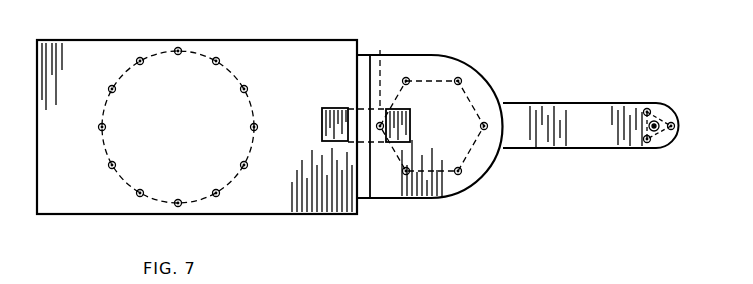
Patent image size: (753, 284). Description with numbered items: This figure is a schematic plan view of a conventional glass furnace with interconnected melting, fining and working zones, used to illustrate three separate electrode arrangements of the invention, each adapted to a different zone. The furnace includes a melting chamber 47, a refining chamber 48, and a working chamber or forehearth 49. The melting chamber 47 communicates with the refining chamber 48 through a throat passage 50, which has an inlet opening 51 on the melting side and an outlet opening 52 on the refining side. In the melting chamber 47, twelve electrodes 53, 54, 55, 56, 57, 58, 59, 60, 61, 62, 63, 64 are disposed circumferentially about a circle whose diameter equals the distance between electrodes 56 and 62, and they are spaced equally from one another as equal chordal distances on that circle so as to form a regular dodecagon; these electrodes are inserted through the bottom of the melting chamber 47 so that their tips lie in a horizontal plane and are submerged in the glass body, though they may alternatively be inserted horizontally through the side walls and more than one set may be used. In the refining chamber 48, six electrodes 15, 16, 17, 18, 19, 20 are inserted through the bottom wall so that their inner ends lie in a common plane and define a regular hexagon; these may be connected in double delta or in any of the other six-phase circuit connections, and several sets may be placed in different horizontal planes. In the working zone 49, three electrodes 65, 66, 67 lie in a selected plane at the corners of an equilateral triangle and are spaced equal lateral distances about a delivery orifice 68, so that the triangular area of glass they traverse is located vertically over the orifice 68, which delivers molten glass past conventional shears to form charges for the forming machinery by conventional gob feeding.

The electrode 15 is at (406, 78).
The electrode 16 is at (461, 81).
The electrode 17 is at (485, 130).
The electrode 18 is at (460, 174).
The electrode 19 is at (406, 174).
The electrode 20 is at (380, 130).
The melting chamber 47 is at (285, 40).
The refining chamber 48 is at (430, 55).
The working chamber or forehearth 49 is at (548, 103).
The throat passage 50 is at (372, 87).
The inlet opening 51 is at (334, 108).
The outlet opening 52 is at (397, 109).
The electrode 53 is at (178, 47).
The electrode 54 is at (218, 58).
The electrode 55 is at (247, 88).
The electrode 56 is at (257, 126).
The electrode 57 is at (245, 168).
The electrode 58 is at (219, 196).
The electrode 59 is at (178, 199).
The electrode 60 is at (138, 196).
The electrode 61 is at (109, 166).
The electrode 62 is at (99, 125).
The electrode 63 is at (109, 88).
The electrode 64 is at (140, 57).
The electrode 65 is at (645, 109).
The electrode 66 is at (675, 125).
The electrode 67 is at (647, 143).
The delivery orifice 68 is at (658, 122).